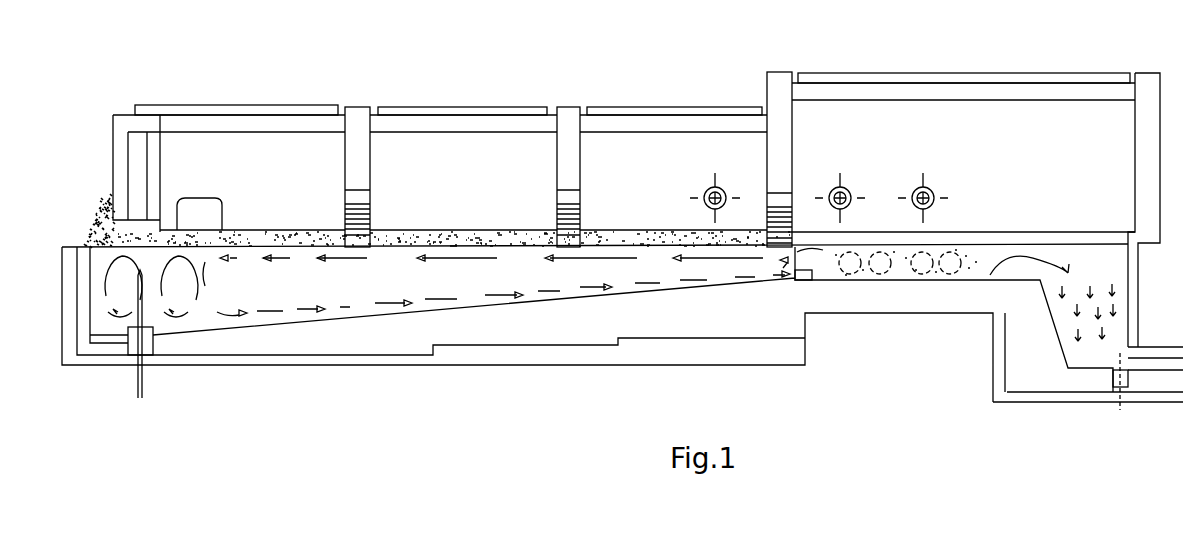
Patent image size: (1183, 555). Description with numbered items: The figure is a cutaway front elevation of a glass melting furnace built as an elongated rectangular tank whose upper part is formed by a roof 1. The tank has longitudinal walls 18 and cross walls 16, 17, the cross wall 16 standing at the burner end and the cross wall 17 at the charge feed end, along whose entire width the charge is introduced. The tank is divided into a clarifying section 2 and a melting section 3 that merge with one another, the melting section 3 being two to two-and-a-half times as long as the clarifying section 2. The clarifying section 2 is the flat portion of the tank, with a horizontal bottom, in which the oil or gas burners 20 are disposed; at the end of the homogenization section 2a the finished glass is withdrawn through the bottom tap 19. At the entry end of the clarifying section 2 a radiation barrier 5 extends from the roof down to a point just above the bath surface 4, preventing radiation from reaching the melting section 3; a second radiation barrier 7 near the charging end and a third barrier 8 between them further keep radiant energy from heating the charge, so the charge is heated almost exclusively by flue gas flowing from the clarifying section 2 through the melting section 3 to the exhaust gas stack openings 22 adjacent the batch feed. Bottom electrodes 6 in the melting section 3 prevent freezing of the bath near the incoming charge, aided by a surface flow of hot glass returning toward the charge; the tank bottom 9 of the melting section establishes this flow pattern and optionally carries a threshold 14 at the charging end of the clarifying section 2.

The roof 1 is at (657, 128).
The clarifying section 2 is at (880, 267).
The homogenization section 2a is at (1103, 307).
The melting section 3 is at (440, 277).
The bath surface 4 is at (660, 247).
The radiation barrier 5 is at (782, 143).
The bottom electrodes 6 is at (142, 318).
The second radiation barrier 7 is at (353, 147).
The third barrier 8 is at (563, 147).
The tank bottom 9 is at (552, 302).
The threshold 14 is at (803, 272).
The cross wall 16 is at (1135, 318).
The cross wall 17 is at (140, 150).
The longitudinal walls 18 is at (498, 201).
The bottom tap 19 is at (1140, 363).
The burners 20 is at (712, 187).
The exhaust gas stack openings 22 is at (210, 217).